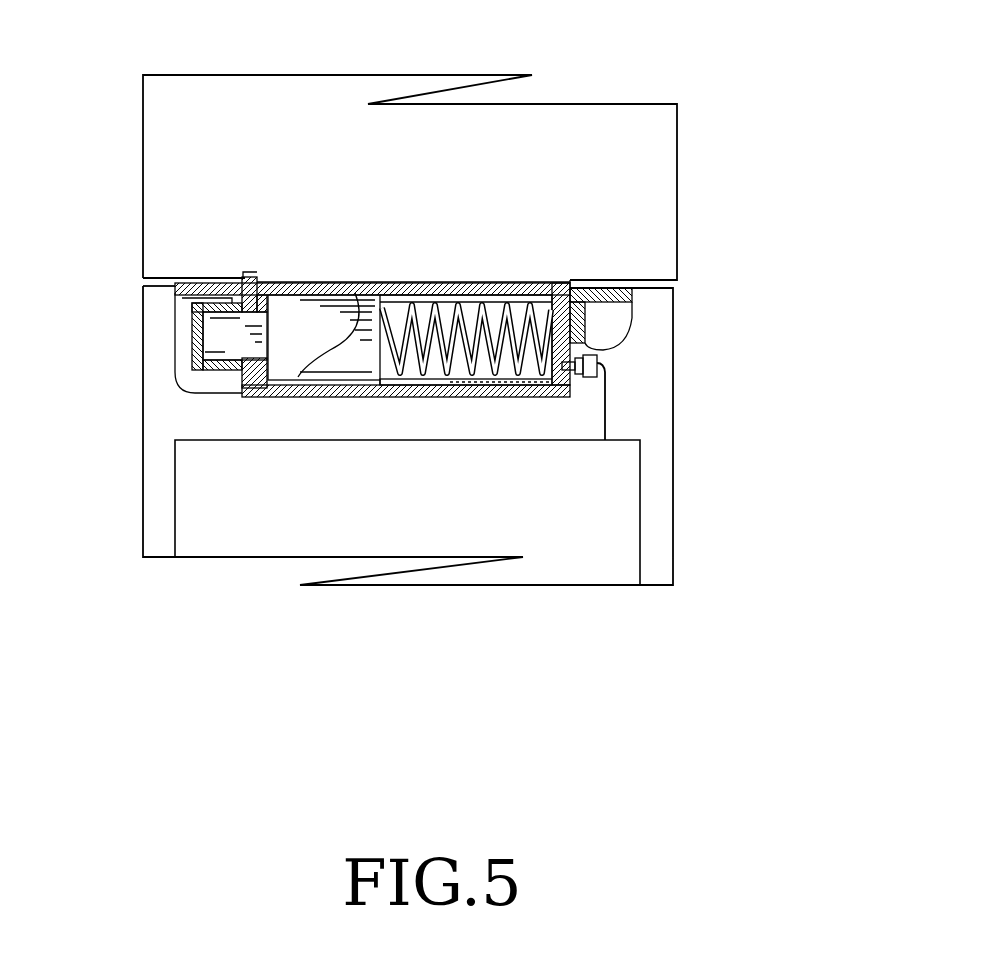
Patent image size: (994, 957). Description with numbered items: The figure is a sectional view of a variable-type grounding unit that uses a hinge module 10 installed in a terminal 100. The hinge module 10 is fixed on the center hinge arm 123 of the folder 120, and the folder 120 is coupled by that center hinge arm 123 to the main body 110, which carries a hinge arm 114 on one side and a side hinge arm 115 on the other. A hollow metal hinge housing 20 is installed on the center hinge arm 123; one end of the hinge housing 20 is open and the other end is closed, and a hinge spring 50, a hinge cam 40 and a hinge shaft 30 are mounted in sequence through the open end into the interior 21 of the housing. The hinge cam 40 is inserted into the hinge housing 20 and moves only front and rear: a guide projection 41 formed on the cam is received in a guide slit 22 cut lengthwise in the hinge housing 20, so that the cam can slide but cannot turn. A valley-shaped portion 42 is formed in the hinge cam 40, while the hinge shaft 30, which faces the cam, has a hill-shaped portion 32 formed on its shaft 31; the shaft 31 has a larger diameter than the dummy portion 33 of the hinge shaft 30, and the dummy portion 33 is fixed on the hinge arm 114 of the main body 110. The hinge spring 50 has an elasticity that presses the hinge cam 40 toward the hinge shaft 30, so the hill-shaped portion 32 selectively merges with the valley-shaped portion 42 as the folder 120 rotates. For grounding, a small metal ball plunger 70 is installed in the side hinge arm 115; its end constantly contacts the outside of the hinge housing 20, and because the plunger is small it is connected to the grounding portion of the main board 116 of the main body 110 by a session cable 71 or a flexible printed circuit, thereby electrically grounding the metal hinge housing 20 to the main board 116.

The terminal 100 is at (778, 171).
The hinge module 10 is at (540, 255).
The hinge housing 20 is at (327, 290).
The spring chamber 21 is at (525, 280).
The guide slit 22 is at (390, 400).
The hinge shaft 30 is at (285, 310).
The shaft 31 is at (240, 388).
The hill-shaped portion 32 is at (232, 368).
The dummy portion 33 is at (203, 320).
The hinge cam 40 is at (372, 300).
The guide projection 41 is at (370, 400).
The valley-shaped portion 42 is at (360, 287).
The hinge spring 50 is at (486, 350).
The ball plunger 70 is at (597, 360).
The session cable 71 is at (605, 413).
The main body 110 is at (143, 514).
The hinge arm 114 is at (200, 338).
The side hinge arm 115 is at (587, 320).
The main board 116 is at (177, 532).
The folder 120 is at (143, 185).
The center hinge arm 123 is at (243, 277).